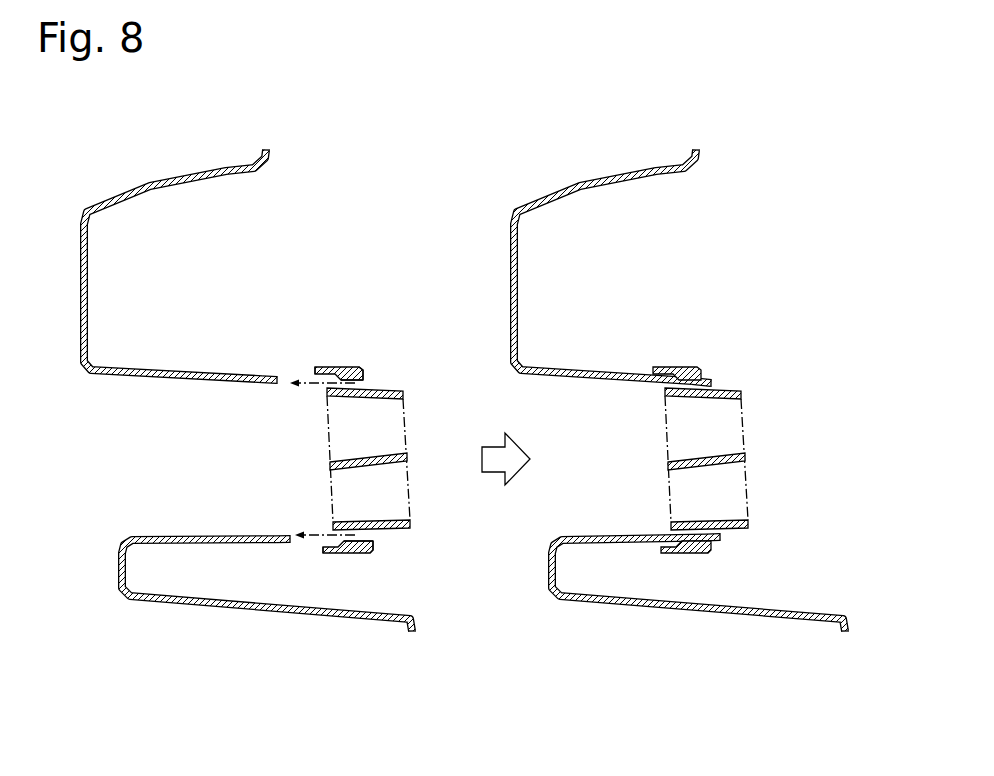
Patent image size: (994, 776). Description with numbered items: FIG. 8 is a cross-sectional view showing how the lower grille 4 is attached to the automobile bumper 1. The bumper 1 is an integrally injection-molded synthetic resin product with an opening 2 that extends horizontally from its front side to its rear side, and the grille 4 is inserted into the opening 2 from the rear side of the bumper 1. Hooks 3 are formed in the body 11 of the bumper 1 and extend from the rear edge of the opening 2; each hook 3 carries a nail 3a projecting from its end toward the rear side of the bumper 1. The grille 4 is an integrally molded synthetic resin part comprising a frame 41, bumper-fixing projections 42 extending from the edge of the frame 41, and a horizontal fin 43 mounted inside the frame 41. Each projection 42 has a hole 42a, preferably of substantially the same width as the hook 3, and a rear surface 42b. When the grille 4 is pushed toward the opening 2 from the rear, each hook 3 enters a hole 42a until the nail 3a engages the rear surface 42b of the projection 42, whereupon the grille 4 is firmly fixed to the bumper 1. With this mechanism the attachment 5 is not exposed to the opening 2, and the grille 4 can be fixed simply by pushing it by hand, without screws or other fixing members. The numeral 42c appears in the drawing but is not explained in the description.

The automobile bumper 1 is at (193, 154).
The opening 2 is at (120, 468).
The hook 3 is at (262, 388).
The nail 3a is at (278, 376).
The lower grille 4 is at (469, 369).
The attachment 5 is at (648, 357).
The body 11 is at (80, 300).
The frame 41 is at (404, 392).
The bumper-fixing projection 42 is at (355, 363).
The hole 42a is at (360, 384).
The rear surface 42b is at (362, 371).
The thin portion of clamp piece 42c is at (318, 366).
The horizontal fin 43 is at (408, 456).